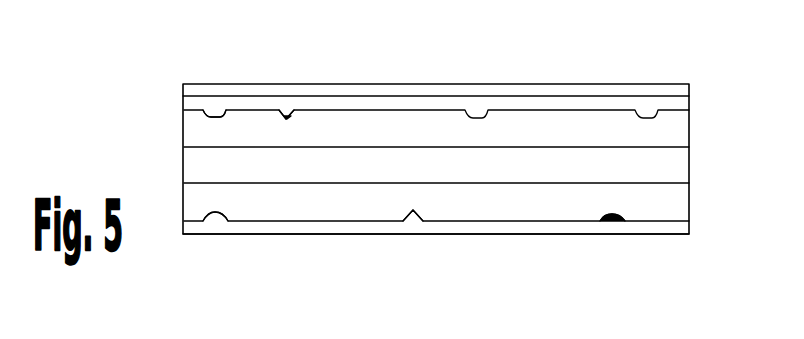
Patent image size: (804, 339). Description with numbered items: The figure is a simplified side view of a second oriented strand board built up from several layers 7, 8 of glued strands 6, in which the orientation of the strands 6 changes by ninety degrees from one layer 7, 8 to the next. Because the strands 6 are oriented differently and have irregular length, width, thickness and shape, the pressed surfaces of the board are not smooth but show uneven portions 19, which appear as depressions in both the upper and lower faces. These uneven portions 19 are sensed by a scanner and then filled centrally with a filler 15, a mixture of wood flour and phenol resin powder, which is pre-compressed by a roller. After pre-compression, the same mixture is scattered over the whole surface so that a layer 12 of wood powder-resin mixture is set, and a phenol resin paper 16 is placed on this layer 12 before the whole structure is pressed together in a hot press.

The layer of wood powder-resin mixture 12 is at (617, 108).
The phenol resin paper 16 is at (513, 92).
The layer 8 is at (678, 137).
The layer 7 is at (683, 173).
The strands 6 is at (683, 207).
The uneven portions 19 is at (223, 117).
The filler 15 is at (288, 117).